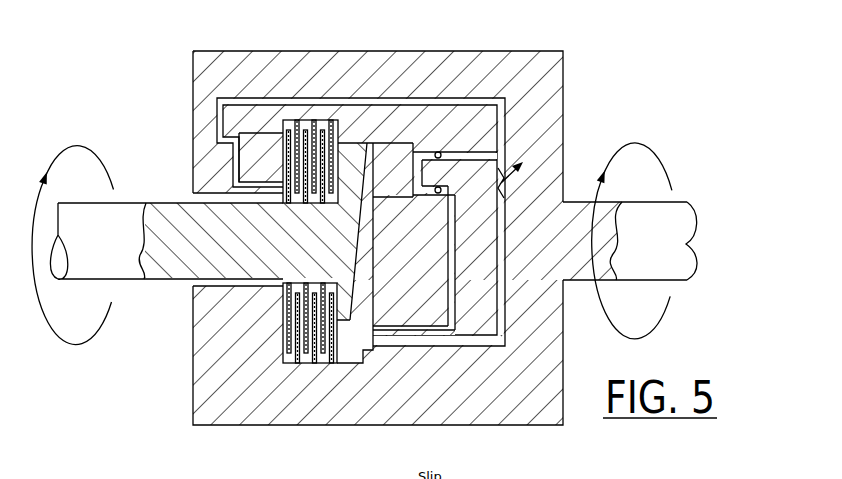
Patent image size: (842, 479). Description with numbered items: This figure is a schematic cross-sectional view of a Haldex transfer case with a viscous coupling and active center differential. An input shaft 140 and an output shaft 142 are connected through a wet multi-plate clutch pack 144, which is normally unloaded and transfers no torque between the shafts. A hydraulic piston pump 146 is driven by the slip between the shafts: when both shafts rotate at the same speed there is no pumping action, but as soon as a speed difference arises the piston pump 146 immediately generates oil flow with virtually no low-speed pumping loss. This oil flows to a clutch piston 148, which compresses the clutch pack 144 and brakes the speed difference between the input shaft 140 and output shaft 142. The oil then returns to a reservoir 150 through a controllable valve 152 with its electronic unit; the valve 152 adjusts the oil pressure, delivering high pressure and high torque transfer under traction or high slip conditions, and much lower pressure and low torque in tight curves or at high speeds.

The input shaft 140 is at (121, 203).
The output shaft 142 is at (675, 202).
The wet multi-plate clutch pack 144 is at (320, 127).
The hydraulic piston pump 146 is at (407, 142).
The clutch piston 148 is at (256, 135).
The reservoir 150 is at (363, 353).
The controllable valve 152 is at (505, 165).